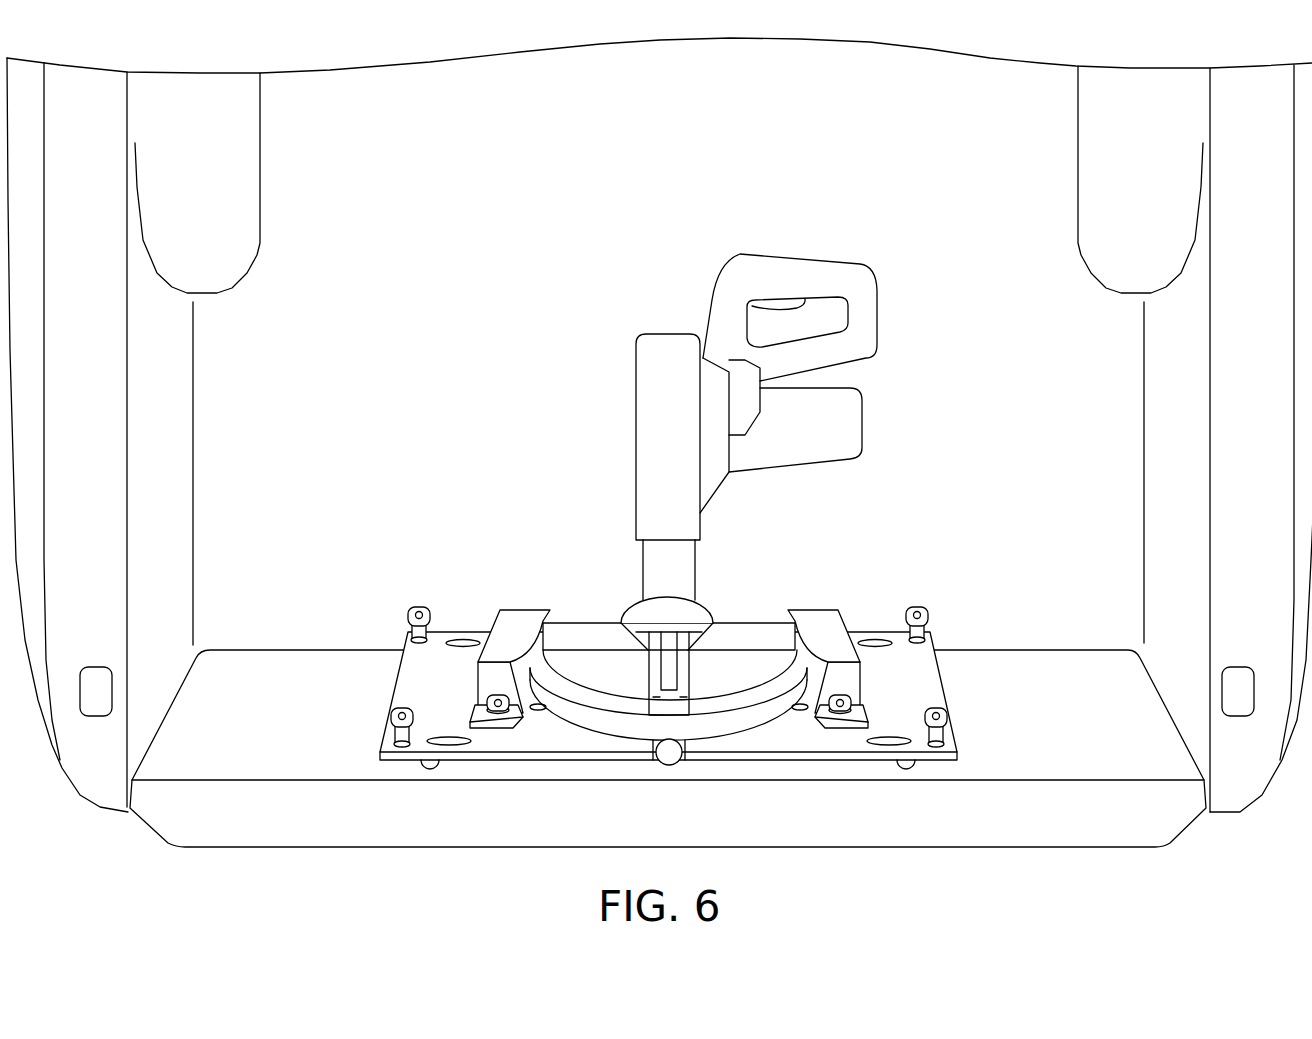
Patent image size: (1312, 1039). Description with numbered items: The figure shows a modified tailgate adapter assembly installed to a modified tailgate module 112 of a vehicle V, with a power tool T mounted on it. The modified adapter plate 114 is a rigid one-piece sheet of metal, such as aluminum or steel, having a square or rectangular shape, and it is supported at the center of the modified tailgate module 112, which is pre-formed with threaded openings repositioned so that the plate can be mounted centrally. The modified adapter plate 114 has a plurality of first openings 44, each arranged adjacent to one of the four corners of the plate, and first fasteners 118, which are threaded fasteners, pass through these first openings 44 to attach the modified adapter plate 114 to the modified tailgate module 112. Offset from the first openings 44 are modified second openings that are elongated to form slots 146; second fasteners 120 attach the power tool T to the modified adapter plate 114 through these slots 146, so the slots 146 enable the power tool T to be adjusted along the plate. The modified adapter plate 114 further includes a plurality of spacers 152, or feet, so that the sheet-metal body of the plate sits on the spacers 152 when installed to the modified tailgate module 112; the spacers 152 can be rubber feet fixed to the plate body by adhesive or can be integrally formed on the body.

The vehicle V is at (430, 58).
The power tool T is at (925, 368).
The modified tailgate module 112 is at (279, 820).
The modified adapter plate 114 is at (788, 771).
The first fasteners 118 is at (420, 606).
The first openings 44 is at (406, 631).
The second fasteners 120 is at (497, 699).
The slots 146 is at (465, 640).
The spacers 152 is at (425, 770).